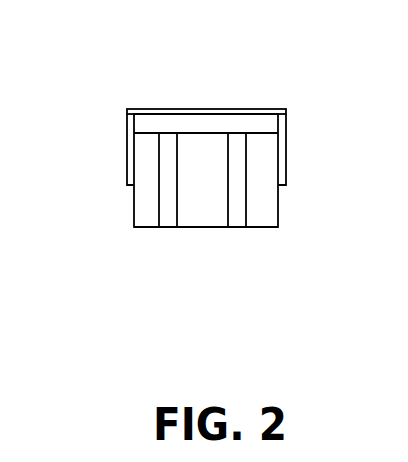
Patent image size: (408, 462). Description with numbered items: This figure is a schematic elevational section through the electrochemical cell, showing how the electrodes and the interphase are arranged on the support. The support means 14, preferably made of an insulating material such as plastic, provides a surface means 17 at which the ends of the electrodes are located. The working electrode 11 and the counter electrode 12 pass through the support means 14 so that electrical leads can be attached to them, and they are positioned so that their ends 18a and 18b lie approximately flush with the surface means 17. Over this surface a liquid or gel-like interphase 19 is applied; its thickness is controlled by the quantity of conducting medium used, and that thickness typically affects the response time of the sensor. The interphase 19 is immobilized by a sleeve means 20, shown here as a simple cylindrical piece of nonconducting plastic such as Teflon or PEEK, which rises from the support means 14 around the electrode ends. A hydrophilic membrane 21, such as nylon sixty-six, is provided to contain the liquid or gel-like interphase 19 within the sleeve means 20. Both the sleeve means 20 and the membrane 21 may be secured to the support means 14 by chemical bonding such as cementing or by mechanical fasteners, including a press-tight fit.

The working electrode 11 is at (163, 202).
The counter electrode 12 is at (238, 204).
The support means 14 is at (192, 223).
The surface means 17 is at (205, 133).
The end of working electrode 18a is at (163, 135).
The end of counter electrode 18b is at (235, 140).
The liquid or gel-like interphase 19 is at (153, 118).
The sleeve means 20 is at (125, 160).
The hydrophilic membrane 21 is at (258, 110).